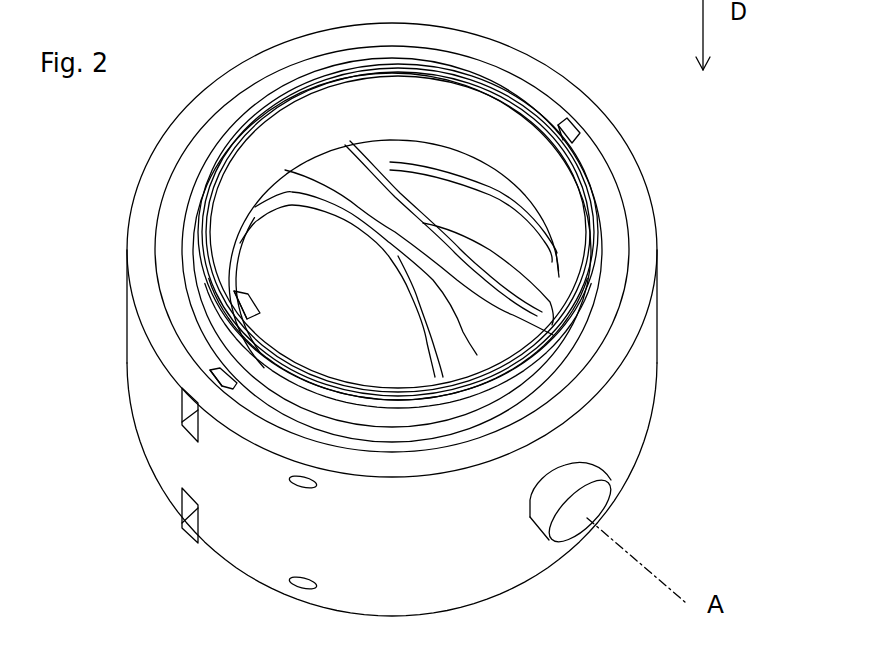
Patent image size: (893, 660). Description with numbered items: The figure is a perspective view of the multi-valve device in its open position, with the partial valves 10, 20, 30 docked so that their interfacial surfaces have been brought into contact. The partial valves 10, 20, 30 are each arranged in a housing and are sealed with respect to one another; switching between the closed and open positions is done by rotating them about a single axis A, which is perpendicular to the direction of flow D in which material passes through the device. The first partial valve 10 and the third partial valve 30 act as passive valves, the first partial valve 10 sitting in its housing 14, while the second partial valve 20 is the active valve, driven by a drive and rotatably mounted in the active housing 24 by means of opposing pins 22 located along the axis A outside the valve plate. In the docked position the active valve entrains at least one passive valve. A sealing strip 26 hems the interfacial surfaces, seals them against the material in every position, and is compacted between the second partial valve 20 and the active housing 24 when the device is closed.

The first partial valve 10 is at (340, 163).
The housing 14 is at (570, 258).
The active housing 24 is at (636, 270).
The third partial valve 30 is at (438, 312).
The second partial valve 20 is at (477, 340).
The sealing strip 26 is at (686, 403).
The pins 22 is at (585, 485).